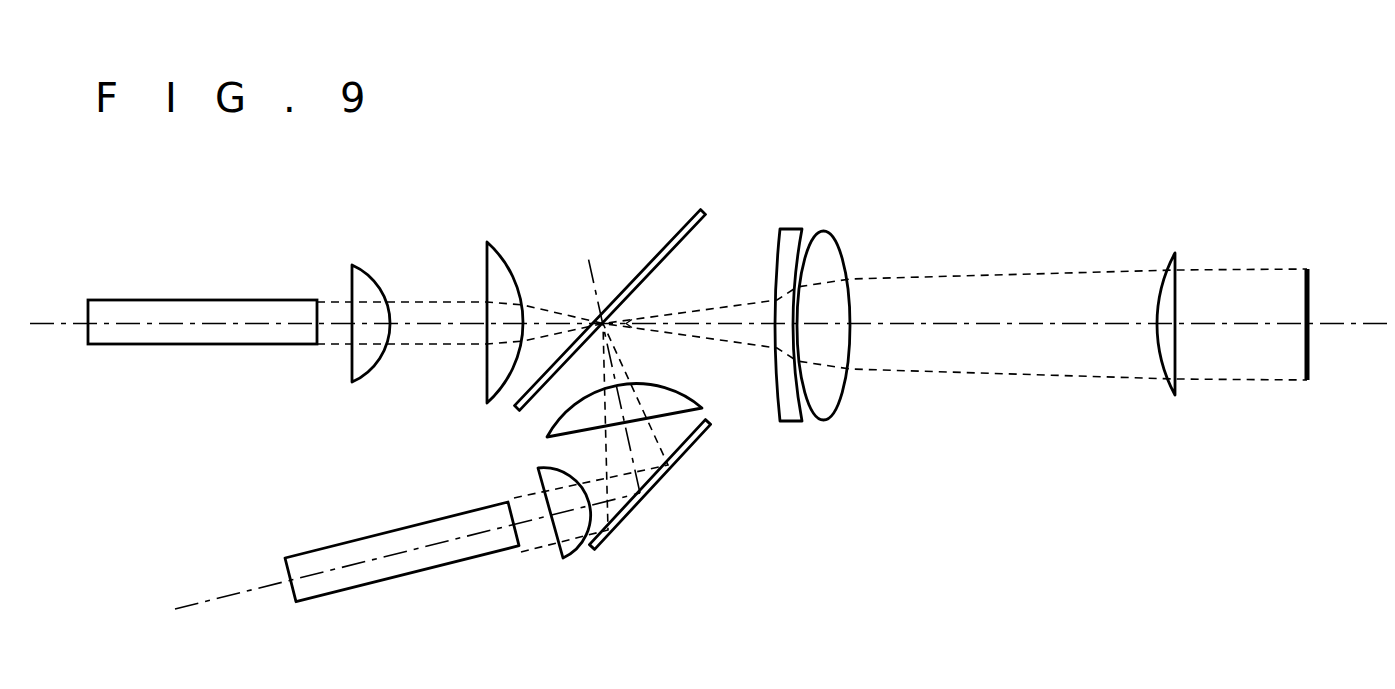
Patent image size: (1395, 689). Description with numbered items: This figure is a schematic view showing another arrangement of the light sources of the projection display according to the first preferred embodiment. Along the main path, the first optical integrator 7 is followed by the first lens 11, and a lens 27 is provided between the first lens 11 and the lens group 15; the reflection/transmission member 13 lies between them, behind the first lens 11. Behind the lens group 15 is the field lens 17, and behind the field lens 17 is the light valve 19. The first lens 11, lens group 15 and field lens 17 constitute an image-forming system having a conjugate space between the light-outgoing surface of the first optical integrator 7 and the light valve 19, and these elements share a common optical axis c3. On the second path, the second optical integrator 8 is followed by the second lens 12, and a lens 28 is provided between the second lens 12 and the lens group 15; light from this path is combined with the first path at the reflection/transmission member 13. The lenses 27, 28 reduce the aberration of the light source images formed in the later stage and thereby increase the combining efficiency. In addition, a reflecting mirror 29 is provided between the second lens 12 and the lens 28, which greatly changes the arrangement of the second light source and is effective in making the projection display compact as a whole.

The first optical integrator 7 is at (205, 300).
The second optical integrator 8 is at (395, 530).
The first lens 11 is at (368, 268).
The second lens 12 is at (565, 556).
The reflection/transmission member 13 is at (680, 228).
The lens group 15 is at (848, 430).
The field lens 17 is at (1173, 253).
The light valve 19 is at (1305, 268).
The lens 27 is at (487, 243).
The lens 28 is at (560, 432).
The reflecting mirror 29 is at (692, 445).
The optical axis c3 is at (1345, 323).